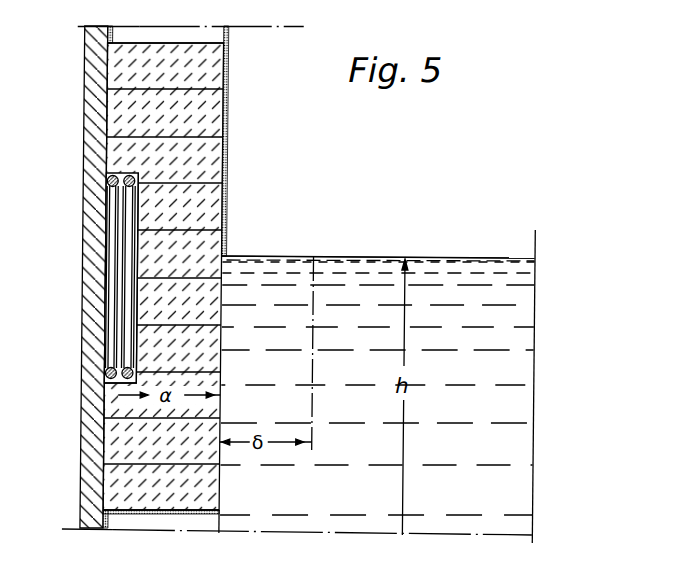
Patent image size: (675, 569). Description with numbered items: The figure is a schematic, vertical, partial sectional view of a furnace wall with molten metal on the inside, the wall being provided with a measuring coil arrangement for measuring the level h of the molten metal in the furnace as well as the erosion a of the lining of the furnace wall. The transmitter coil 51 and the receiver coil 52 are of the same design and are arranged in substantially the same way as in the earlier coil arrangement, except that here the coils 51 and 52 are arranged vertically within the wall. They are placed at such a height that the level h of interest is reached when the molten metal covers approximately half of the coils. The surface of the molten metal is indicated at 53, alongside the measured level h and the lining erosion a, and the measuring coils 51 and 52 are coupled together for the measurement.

The transmitter coil 51 is at (113, 192).
The receiver coil 52 is at (120, 384).
The liquid surface 53 is at (339, 256).